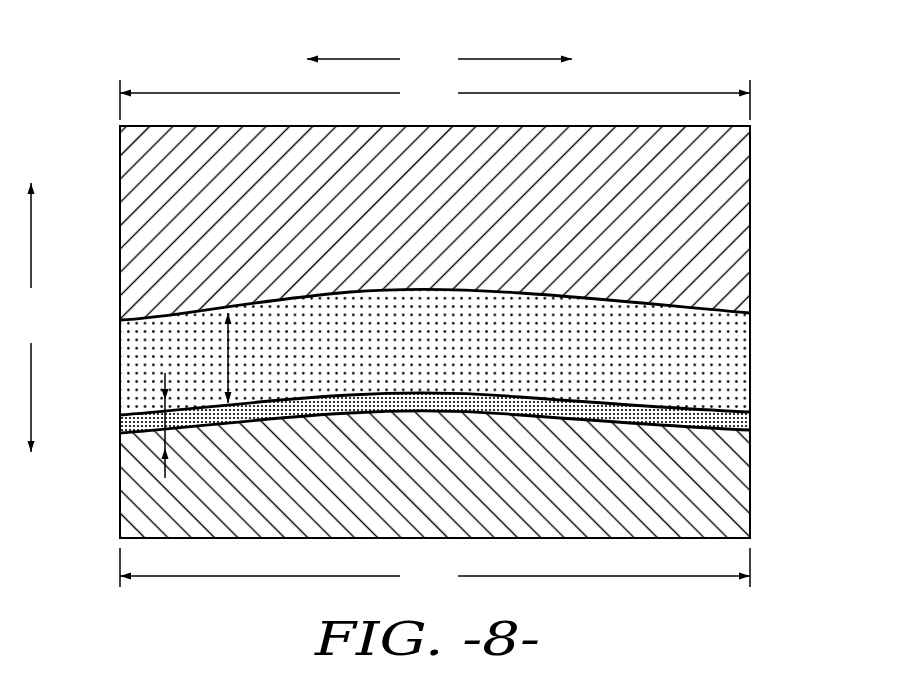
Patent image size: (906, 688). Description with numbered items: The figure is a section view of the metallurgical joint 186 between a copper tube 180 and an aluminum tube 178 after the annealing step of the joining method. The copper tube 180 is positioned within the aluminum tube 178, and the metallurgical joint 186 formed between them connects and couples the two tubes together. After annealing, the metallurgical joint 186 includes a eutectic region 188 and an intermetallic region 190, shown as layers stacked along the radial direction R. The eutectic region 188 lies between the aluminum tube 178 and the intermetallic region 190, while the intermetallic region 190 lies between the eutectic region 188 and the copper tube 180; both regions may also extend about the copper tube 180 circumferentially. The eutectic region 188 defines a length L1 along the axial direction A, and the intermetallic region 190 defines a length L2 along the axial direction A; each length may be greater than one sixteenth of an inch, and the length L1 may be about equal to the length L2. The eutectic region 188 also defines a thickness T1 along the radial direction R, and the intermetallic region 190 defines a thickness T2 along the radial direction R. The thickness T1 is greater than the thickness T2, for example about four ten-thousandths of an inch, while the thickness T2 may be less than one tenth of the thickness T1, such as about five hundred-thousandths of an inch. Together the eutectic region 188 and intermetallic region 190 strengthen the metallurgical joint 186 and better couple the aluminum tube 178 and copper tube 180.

The metallurgical joint 186 is at (409, 270).
The aluminum tube 178 is at (143, 192).
The copper tube 180 is at (140, 493).
The eutectic region 188 is at (730, 348).
The intermetallic region 190 is at (752, 425).
The thickness of eutectic region T1 is at (228, 348).
The thickness of intermetallic region T2 is at (163, 383).
The radial direction R is at (30, 317).
The axial direction A is at (439, 62).
The length of eutectic region L1 is at (435, 100).
The length of intermetallic region L2 is at (435, 569).